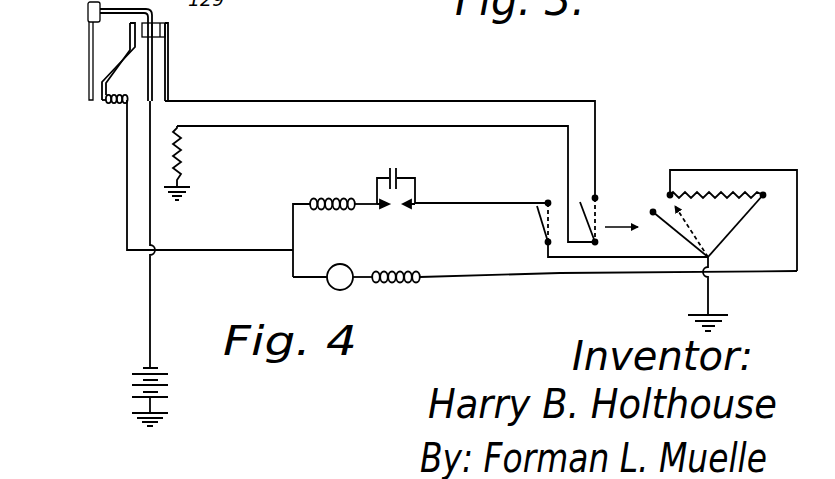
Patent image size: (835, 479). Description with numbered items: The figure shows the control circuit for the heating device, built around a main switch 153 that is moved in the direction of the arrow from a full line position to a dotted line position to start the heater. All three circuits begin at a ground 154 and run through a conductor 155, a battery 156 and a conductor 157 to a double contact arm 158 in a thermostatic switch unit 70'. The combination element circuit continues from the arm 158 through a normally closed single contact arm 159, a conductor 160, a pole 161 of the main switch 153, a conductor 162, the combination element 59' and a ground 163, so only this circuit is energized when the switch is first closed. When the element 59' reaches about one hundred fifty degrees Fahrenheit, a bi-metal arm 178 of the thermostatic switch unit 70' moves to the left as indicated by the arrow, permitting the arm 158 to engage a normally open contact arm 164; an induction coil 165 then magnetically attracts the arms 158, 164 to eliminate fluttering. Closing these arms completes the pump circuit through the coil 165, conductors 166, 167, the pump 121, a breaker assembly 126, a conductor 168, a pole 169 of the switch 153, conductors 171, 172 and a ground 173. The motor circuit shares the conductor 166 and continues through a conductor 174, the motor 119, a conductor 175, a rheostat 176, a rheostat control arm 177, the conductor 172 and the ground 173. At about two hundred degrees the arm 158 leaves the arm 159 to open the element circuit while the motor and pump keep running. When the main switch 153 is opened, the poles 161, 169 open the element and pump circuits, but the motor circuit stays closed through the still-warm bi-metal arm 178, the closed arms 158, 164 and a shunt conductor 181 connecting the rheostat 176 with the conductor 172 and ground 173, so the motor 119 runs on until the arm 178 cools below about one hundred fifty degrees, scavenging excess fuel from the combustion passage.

The bi-metal arm 178 is at (100, 49).
The double contact arm 158 is at (153, 53).
The single contact arm 159 is at (168, 82).
The contact arm 164 is at (127, 61).
The induction coil 165 is at (118, 105).
The thermostatic switch unit 70' is at (73, 123).
The conductor 157 is at (152, 226).
The conductor 166 is at (252, 250).
The conductor 160 is at (424, 100).
The conductor 162 is at (498, 126).
The combination element 59' is at (203, 156).
The ground 163 is at (190, 190).
The conductor 167 is at (293, 224).
The pump 121 is at (326, 197).
The breaker assembly 126 is at (404, 209).
The conductor 168 is at (498, 203).
The pole 169 is at (545, 223).
The conductor 171 is at (647, 257).
The conductor 174 is at (295, 263).
The motor 119 is at (363, 287).
The conductor 175 is at (727, 168).
The rheostat 176 is at (725, 190).
The shunt conductor 181 is at (737, 230).
The rheostat control arm 177 is at (692, 241).
The conductor 172 is at (709, 292).
The ground 173 is at (722, 325).
The pole 161 is at (593, 227).
The main switch 153 is at (614, 208).
The battery 156 is at (130, 383).
The conductor 155 is at (150, 403).
The ground 154 is at (160, 421).